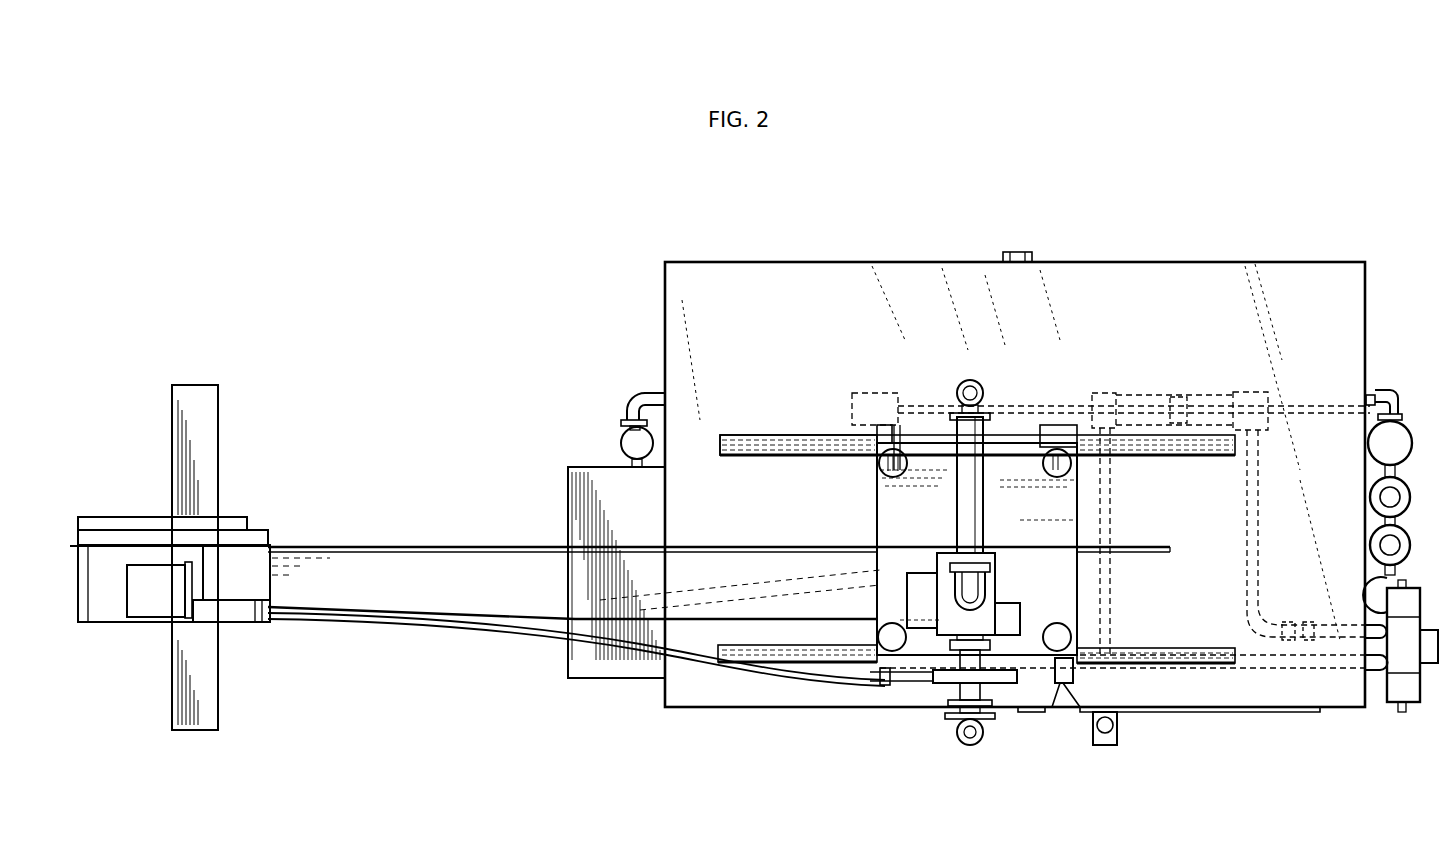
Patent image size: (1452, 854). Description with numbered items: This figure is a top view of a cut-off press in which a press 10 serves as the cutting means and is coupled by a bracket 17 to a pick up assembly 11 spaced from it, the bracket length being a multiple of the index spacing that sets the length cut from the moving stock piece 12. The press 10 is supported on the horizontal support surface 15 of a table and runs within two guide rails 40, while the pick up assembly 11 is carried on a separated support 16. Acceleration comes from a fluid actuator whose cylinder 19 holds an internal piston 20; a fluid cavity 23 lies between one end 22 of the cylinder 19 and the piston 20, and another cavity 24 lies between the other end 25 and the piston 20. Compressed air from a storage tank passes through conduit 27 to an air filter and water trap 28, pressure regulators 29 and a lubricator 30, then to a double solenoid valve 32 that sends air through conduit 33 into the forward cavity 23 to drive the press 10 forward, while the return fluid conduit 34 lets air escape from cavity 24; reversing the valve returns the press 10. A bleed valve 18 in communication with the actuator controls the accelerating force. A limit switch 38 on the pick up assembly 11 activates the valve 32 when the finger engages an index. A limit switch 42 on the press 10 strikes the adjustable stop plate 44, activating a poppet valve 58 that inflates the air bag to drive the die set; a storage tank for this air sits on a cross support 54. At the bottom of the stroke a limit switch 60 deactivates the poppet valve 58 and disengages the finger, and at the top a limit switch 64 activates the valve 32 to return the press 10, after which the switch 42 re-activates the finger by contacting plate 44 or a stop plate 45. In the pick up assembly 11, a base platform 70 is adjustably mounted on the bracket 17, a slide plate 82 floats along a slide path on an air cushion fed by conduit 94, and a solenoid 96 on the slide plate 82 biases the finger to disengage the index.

The press 10 is at (938, 732).
The pick up assembly 11 is at (255, 485).
The stock piece 12 is at (358, 546).
The horizontal support surface 15 is at (830, 273).
The separated support 16 is at (188, 385).
The bracket 17 is at (432, 562).
The bleed valve 18 is at (1115, 745).
The cylinder 19 is at (1197, 397).
The internal piston 20 is at (1066, 410).
The one end of the cylinder 22 is at (1104, 393).
The fluid cavity 23 is at (1150, 400).
The cavity 24 is at (1215, 405).
The other end of the cylinder 25 is at (1268, 410).
The conduit 27 is at (1373, 400).
The air filter and water trap 28 is at (1398, 430).
The pressure regulators 29 is at (1398, 555).
The lubricator 30 is at (1375, 587).
The double solenoid valve 32 is at (1430, 664).
The conduit 33 is at (1115, 600).
The return fluid conduit 34 is at (1252, 480).
The limit switch 38 is at (240, 612).
The guide rails 40 is at (760, 437).
The limit switch 42 is at (1065, 700).
The stop plate 44 is at (1210, 712).
The stop plate 45 is at (1032, 712).
The cross support 54 is at (1003, 685).
The poppet valve 58 is at (1000, 585).
The limit switch 60 is at (1040, 460).
The limit switch 64 is at (878, 462).
The base platform 70 is at (262, 562).
The slide plate 82 is at (105, 605).
The conduit 94 is at (548, 630).
The solenoid 96 is at (152, 602).